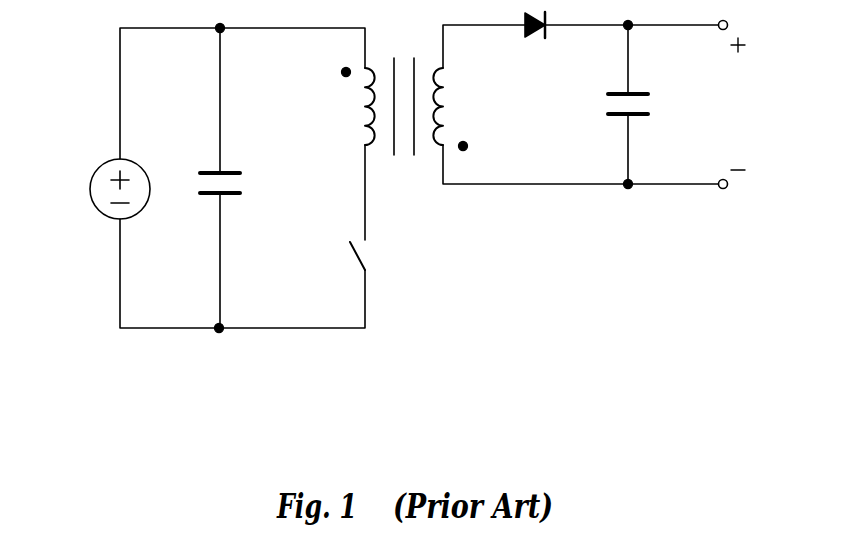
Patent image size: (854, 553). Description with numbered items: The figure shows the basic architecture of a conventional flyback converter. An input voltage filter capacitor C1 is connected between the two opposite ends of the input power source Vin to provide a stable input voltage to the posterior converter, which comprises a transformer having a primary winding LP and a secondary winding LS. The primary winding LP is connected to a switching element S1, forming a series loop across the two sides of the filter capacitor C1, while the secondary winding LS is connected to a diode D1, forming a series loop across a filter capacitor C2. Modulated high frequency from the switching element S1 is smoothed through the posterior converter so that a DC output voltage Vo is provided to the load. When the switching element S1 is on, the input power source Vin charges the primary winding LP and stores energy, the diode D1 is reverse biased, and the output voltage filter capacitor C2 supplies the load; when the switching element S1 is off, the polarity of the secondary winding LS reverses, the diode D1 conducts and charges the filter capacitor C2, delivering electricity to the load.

The input power source Vin is at (95, 189).
The input voltage filter capacitor C1 is at (241, 188).
The switching element S1 is at (330, 264).
The primary winding LP is at (336, 107).
The secondary winding LS is at (469, 109).
The diode D1 is at (531, 44).
The output voltage filter capacitor C2 is at (602, 112).
The DC output voltage Vo is at (735, 105).